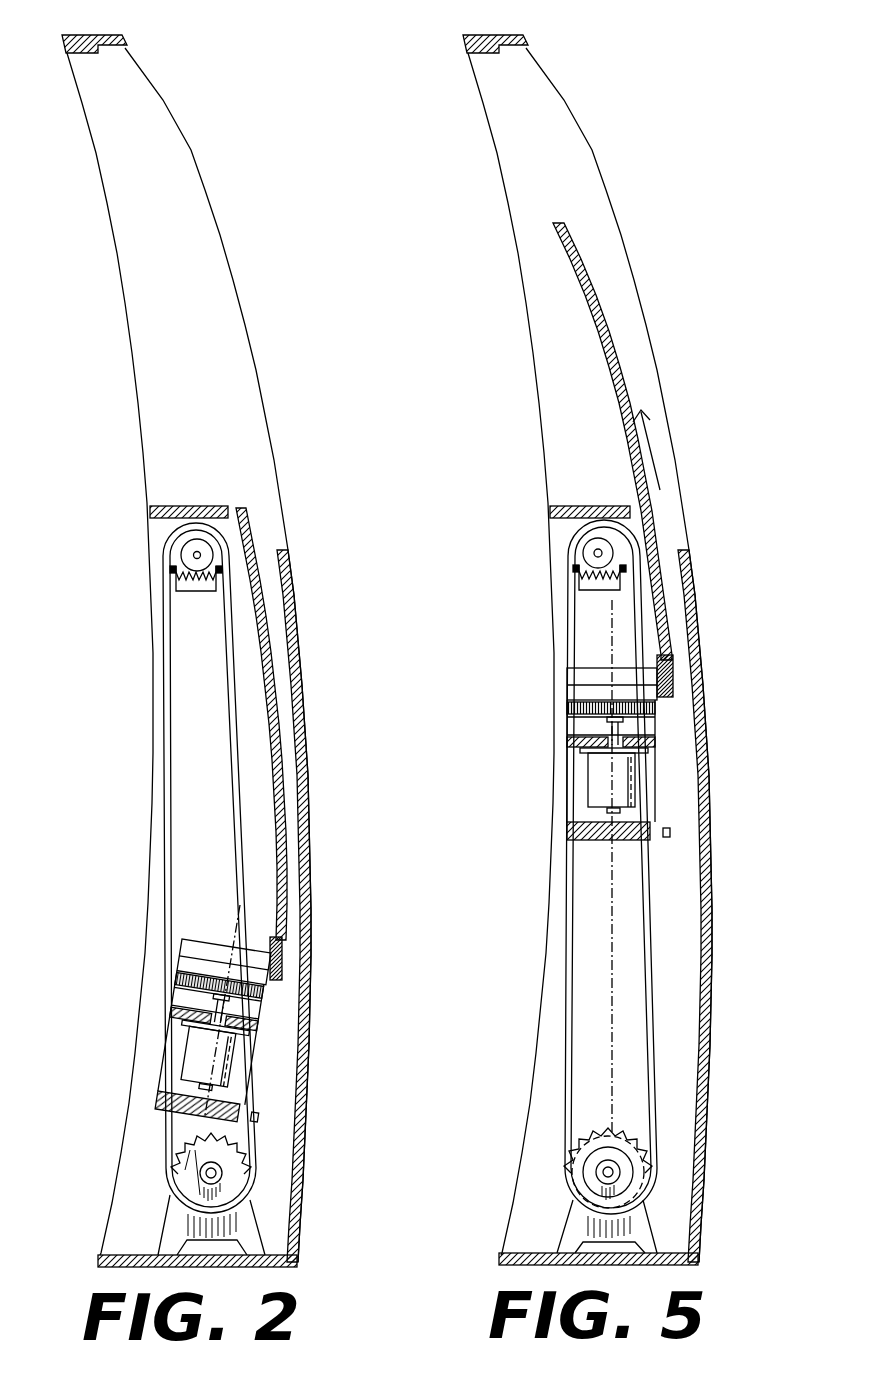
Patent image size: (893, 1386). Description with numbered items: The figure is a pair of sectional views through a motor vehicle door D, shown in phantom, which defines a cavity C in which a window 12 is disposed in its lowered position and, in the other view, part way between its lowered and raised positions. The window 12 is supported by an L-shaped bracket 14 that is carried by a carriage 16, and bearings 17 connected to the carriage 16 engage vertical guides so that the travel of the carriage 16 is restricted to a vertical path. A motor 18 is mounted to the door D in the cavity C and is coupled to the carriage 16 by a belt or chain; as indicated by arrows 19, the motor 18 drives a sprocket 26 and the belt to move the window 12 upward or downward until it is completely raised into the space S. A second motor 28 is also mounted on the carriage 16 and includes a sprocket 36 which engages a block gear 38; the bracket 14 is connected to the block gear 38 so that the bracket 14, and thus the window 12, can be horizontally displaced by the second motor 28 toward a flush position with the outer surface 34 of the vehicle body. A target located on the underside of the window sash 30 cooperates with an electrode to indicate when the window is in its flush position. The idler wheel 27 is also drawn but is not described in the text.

In FIG. 2, the space S is at (147, 173).
In FIG. 5, the space S is at (548, 173).
In FIG. 2, the motor vehicle door D is at (123, 37).
In FIG. 5, the motor vehicle door D is at (524, 37).
In FIG. 2, the cavity C is at (206, 791).
In FIG. 5, the cavity C is at (612, 1025).
In FIG. 2, the window 12 is at (255, 538).
In FIG. 5, the window 12 is at (598, 350).
In FIG. 2, the L-shaped bracket 14 is at (282, 984).
In FIG. 5, the L-shaped bracket 14 is at (672, 697).
In FIG. 2, the carriage 16 is at (168, 1043).
In FIG. 5, the carriage 16 is at (572, 778).
In FIG. 5, the bearings 17 is at (636, 1183).
In FIG. 2, the motor 18 is at (248, 1220).
In FIG. 5, the motor 18 is at (655, 1222).
In FIG. 5, the arrows 19 is at (615, 550).
In FIG. 2, the sprocket 26 is at (236, 1181).
In FIG. 5, the sprocket 26 is at (645, 1147).
In FIG. 2, the idler sprocket 27 is at (183, 574).
In FIG. 5, the idler sprocket 27 is at (614, 573).
In FIG. 2, the second motor 28 is at (235, 1063).
In FIG. 5, the second motor 28 is at (628, 780).
In FIG. 2, the window sash 30 is at (193, 506).
In FIG. 5, the window sash 30 is at (592, 506).
In FIG. 2, the outer surface 34 is at (310, 738).
In FIG. 5, the outer surface 34 is at (713, 977).
In FIG. 2, the sprocket 36 is at (190, 997).
In FIG. 5, the sprocket 36 is at (600, 707).
In FIG. 2, the block gear 38 is at (211, 938).
In FIG. 5, the block gear 38 is at (600, 668).